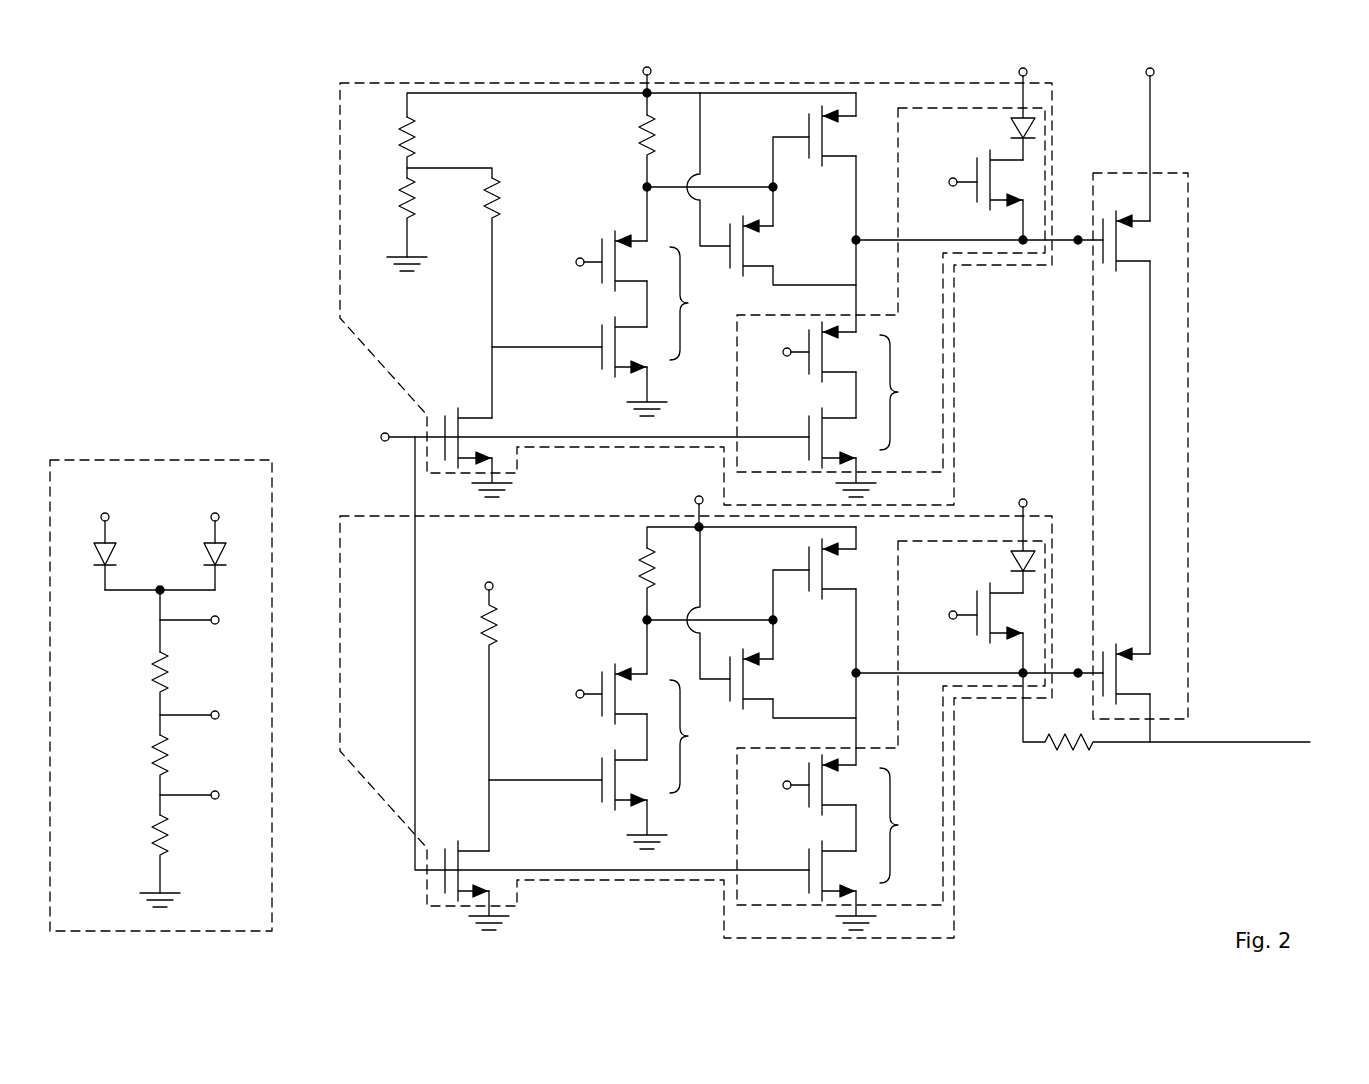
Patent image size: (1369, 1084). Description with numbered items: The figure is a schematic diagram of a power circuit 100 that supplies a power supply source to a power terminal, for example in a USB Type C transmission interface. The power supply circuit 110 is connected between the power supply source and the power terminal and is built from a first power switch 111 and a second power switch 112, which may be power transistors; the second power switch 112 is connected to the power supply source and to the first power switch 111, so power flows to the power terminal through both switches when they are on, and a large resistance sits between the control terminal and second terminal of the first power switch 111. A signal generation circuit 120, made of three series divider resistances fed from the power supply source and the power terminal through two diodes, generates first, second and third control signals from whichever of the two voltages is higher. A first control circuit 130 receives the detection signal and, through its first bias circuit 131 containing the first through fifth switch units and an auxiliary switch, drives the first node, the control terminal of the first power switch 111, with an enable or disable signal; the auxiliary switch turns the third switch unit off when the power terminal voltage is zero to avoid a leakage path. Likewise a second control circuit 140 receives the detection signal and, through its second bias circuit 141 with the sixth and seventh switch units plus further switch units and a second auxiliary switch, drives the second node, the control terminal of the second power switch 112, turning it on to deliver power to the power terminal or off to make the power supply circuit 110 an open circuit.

The power circuit 100 is at (1326, 120).
The power supply circuit 110 is at (1188, 315).
The first power switch 111 is at (1140, 674).
The second power switch 112 is at (1140, 241).
The signal generation circuit 120 is at (159, 460).
The first control circuit 130 is at (954, 920).
The first bias circuit 131 is at (943, 865).
The second control circuit 140 is at (954, 408).
The second bias circuit 141 is at (943, 353).